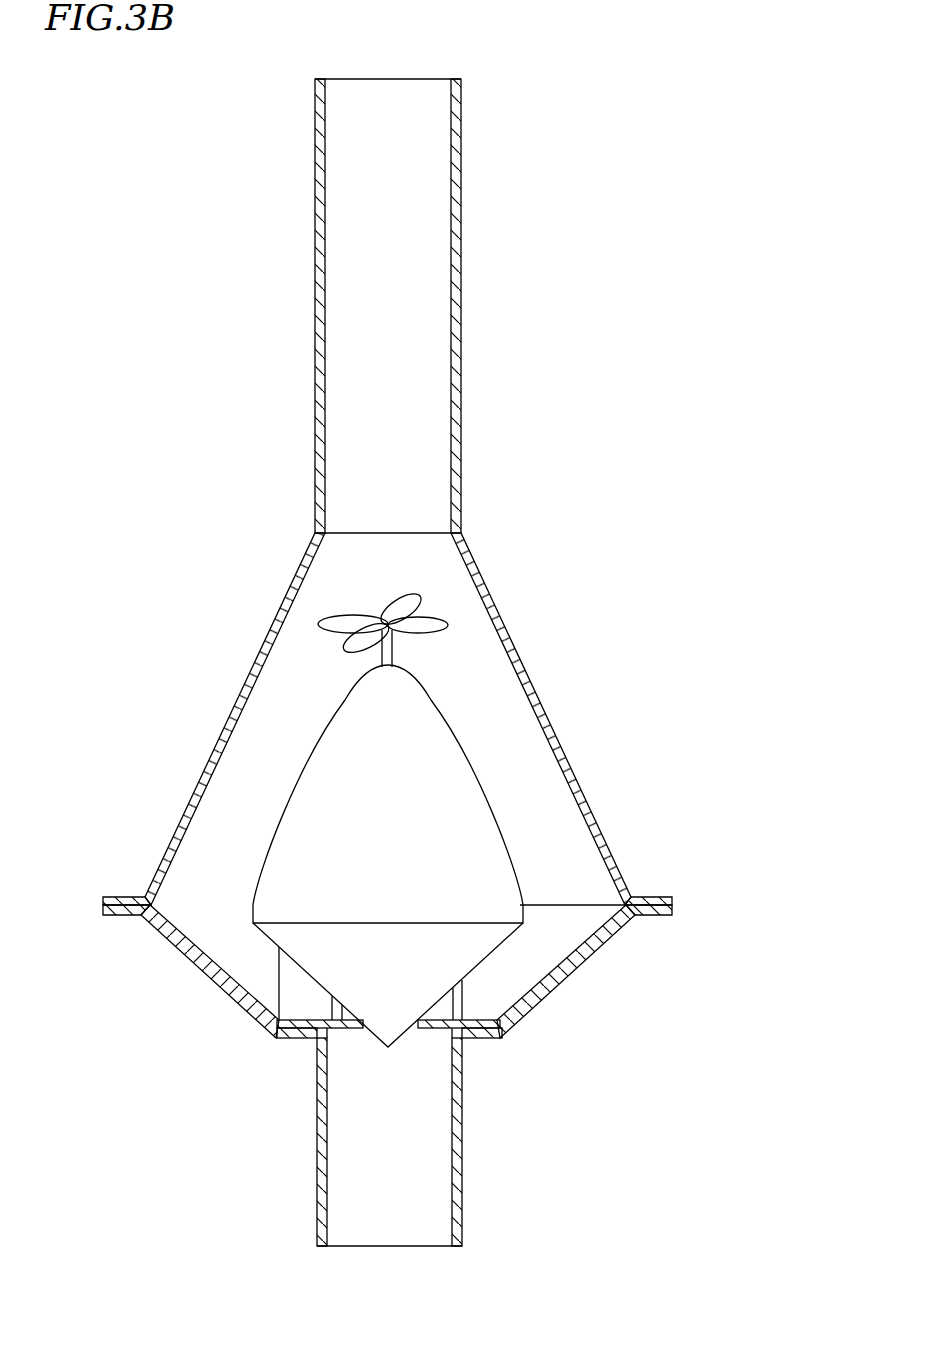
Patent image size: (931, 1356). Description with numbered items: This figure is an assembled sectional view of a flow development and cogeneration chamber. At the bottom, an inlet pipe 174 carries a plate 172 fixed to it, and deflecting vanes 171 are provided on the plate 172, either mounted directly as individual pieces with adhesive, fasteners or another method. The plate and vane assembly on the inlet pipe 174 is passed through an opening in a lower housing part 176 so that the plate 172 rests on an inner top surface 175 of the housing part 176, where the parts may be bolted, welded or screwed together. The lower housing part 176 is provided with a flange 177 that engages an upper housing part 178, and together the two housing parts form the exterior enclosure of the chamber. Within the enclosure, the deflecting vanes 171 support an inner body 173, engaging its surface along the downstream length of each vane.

The deflecting vanes 171 is at (462, 1002).
The plate 172 is at (480, 1043).
The inner body 173 is at (450, 763).
The inlet pipe 174 is at (462, 1167).
The inner top surface 175 is at (325, 1023).
The lower housing part 176 is at (578, 960).
The flange 177 is at (660, 916).
The upper housing part 178 is at (557, 722).